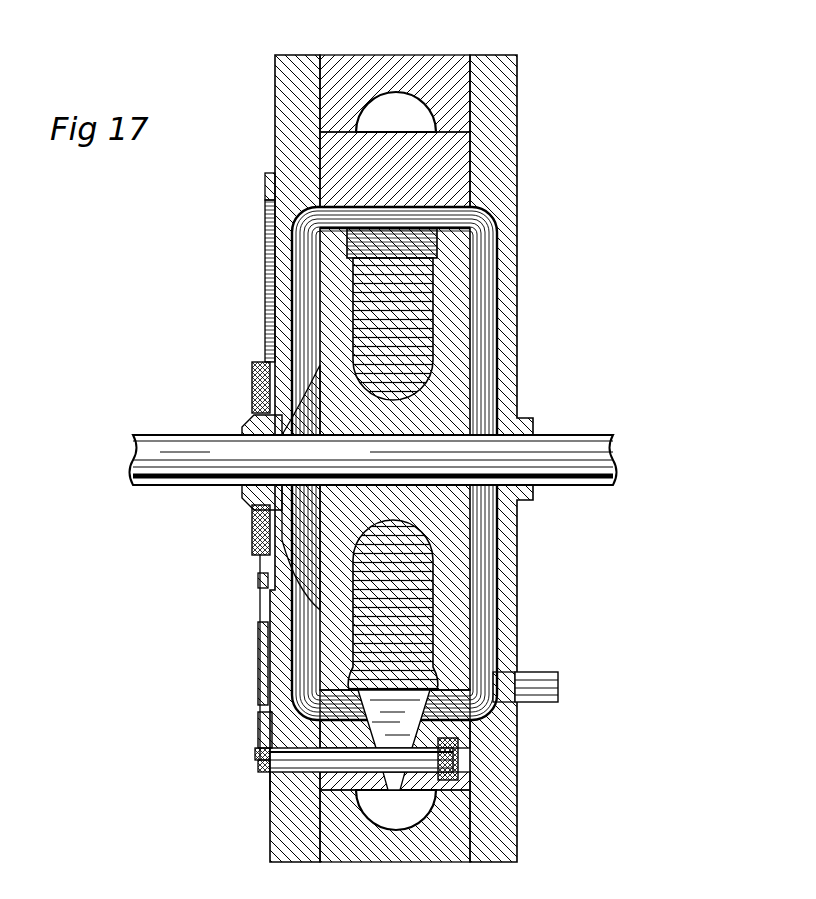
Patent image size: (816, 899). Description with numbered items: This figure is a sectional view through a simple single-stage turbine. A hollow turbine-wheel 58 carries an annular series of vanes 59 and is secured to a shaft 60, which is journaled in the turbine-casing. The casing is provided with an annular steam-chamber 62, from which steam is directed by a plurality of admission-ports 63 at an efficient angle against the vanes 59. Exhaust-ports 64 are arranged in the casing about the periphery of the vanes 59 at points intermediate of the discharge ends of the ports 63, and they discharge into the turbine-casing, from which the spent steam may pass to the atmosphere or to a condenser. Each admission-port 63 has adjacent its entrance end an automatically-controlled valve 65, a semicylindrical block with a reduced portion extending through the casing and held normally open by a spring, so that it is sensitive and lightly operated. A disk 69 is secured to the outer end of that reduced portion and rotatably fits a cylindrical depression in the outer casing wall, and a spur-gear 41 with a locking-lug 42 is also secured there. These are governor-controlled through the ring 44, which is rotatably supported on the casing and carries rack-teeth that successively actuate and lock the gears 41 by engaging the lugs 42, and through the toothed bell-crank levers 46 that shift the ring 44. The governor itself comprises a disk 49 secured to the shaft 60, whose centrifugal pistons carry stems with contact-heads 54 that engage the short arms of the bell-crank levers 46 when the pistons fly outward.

The annular steam-chamber 62 is at (398, 102).
The exhaust-ports 64 is at (480, 212).
The annular series of vanes 59 is at (430, 245).
The hollow turbine-wheel 58 is at (405, 330).
The shaft 60 is at (590, 455).
The disk 49 is at (242, 427).
The contact-head 54 is at (262, 358).
The ring 44 is at (265, 258).
The toothed bell-crank levers 46 is at (258, 660).
The locking-lug 42 is at (262, 758).
The spur-gear 41 is at (262, 766).
The disk 69 is at (272, 785).
The admission-ports 63 is at (410, 720).
The automatically-controlled valve 65 is at (456, 760).